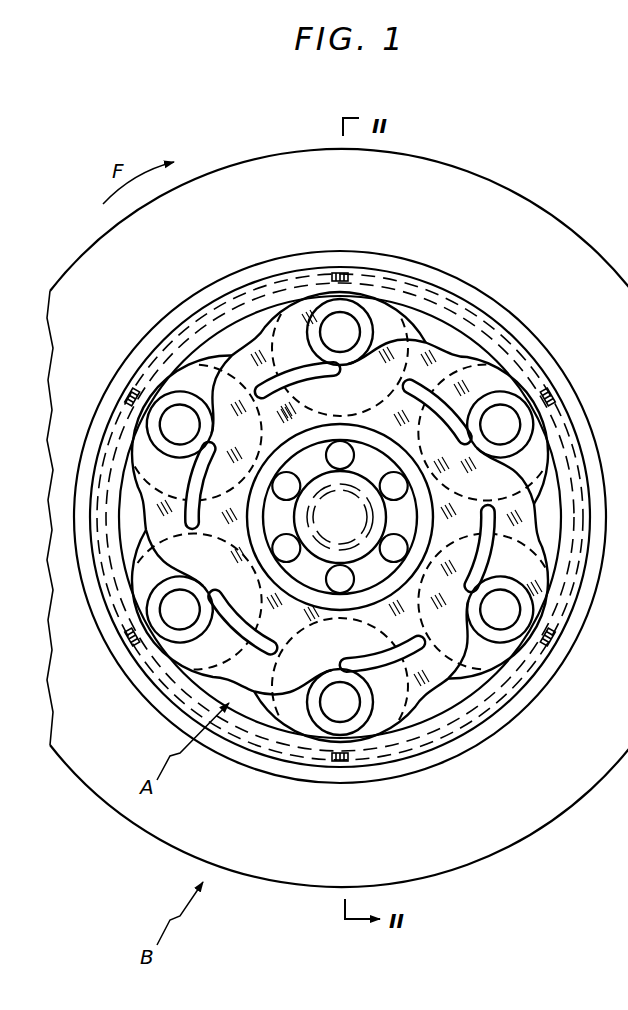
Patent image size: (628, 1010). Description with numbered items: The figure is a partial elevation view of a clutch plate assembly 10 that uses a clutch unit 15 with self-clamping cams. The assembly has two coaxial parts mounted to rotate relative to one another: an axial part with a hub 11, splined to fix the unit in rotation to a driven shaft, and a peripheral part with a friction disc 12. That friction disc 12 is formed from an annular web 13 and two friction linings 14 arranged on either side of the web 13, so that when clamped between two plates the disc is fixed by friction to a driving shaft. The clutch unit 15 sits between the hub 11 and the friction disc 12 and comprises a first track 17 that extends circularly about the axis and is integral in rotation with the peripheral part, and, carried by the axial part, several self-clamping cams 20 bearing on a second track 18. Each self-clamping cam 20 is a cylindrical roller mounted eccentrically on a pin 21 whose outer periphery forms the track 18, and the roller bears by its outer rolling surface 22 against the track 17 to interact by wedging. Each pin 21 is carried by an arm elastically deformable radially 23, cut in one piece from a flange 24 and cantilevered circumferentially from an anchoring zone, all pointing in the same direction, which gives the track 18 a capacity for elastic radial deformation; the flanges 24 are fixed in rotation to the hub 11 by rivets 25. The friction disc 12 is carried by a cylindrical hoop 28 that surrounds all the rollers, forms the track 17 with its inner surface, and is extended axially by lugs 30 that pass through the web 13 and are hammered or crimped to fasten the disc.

The clutch plate assembly 10 is at (514, 178).
The hub 11 is at (311, 604).
The friction disc 12 is at (147, 838).
The annular web 13 is at (584, 524).
The friction linings 14 is at (352, 198).
The clutch unit 15 is at (262, 712).
The first track 17 is at (452, 302).
The second track 18 is at (316, 316).
The self-clamping cam 20 is at (341, 516).
The pin 21 is at (331, 342).
The outer rolling surface 22 is at (400, 321).
The arm elastically deformable radially 23 is at (366, 310).
The flange 24 is at (454, 681).
The rivets 25 is at (339, 517).
The cylindrical hoop 28 is at (199, 316).
The lugs 30 is at (340, 268).